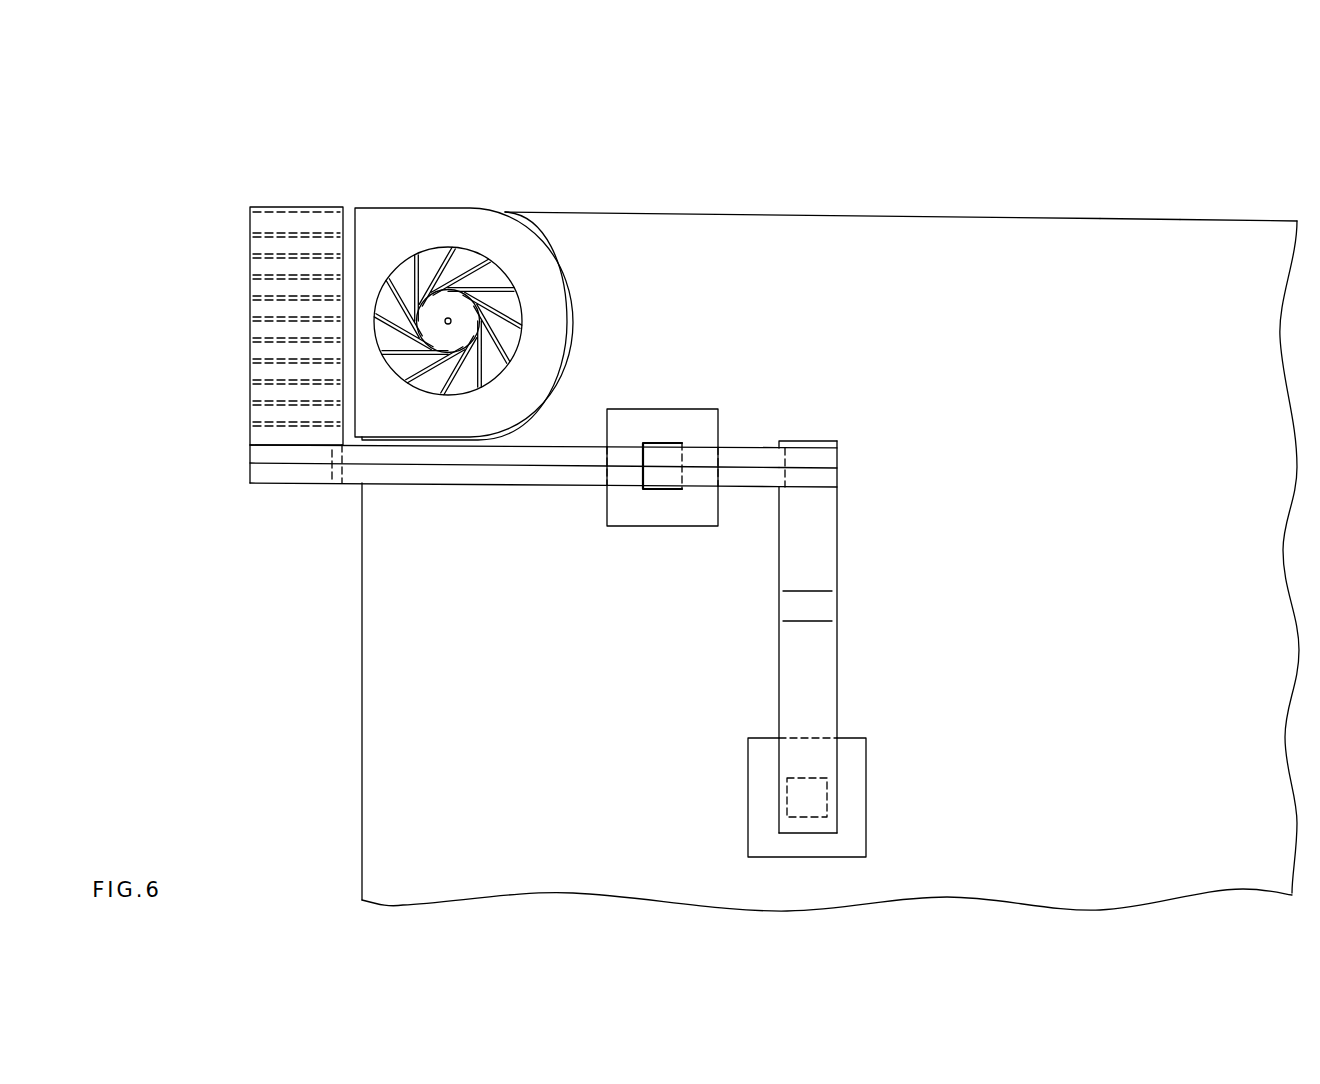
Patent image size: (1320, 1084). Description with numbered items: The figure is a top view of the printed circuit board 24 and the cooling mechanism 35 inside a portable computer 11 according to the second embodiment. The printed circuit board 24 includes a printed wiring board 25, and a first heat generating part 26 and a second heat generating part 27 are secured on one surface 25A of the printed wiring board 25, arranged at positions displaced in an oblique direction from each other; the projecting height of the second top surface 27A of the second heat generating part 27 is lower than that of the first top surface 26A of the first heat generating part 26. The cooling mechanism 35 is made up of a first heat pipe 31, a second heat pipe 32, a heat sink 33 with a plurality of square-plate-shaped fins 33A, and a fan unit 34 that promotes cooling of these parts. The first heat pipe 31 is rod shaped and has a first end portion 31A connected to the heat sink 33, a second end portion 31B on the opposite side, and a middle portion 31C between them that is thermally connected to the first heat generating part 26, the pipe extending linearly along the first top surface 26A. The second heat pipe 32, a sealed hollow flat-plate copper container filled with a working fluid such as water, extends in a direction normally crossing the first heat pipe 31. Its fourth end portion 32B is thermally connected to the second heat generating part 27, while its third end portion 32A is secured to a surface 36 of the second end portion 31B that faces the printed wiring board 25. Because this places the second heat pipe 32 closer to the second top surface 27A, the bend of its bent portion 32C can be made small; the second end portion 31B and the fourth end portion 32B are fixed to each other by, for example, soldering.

The portable computer 11 is at (982, 168).
The printed circuit board 24 is at (890, 210).
The printed wiring board 25 is at (1118, 232).
The surface of printed wiring board 25A is at (1195, 247).
The first heat generating part 26 is at (718, 433).
The first top surface 26A is at (655, 445).
The second heat generating part 27 is at (760, 803).
The second top surface 27A is at (827, 795).
The first heat pipe 31 is at (507, 472).
The first end portion 31A is at (302, 472).
The second end portion 31B is at (827, 480).
The middle portion 31C is at (658, 478).
The second heat pipe 32 is at (823, 536).
The third end portion 32A is at (800, 443).
The fourth end portion 32B is at (806, 823).
The bent portion 32C is at (823, 608).
The heat sink 33 is at (296, 207).
The fins 33A is at (265, 358).
The fan unit 34 is at (425, 221).
The cooling mechanism 35 is at (731, 352).
The surface of second end portion 36 is at (747, 478).